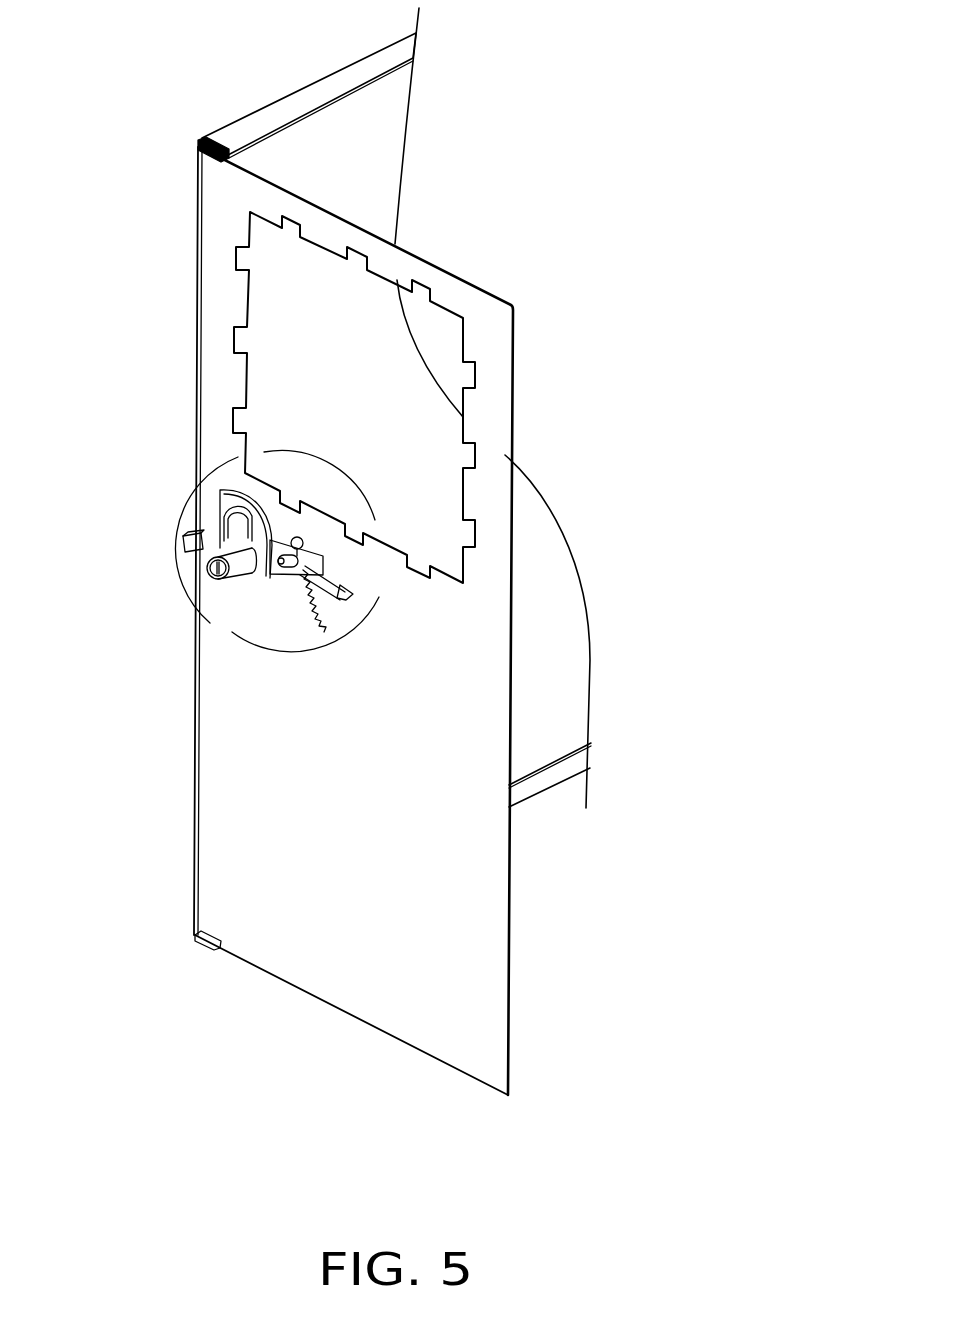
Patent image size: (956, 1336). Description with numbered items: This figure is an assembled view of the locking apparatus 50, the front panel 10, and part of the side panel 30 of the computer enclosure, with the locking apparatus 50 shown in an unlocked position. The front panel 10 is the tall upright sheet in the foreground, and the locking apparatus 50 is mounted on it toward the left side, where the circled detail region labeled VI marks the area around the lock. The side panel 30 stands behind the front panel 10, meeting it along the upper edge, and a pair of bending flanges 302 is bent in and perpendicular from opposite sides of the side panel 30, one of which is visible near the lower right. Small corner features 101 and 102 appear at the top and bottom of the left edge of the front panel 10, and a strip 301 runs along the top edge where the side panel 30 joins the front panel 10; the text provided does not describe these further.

The front panel 10 is at (395, 1025).
The first tab 101 is at (202, 150).
The second tab 102 is at (194, 936).
The side panel 30 is at (385, 133).
The top flange of door 301 is at (360, 73).
The bending flanges 302 is at (533, 790).
The locking apparatus 50 is at (214, 610).
The detail view circle VI is at (190, 500).